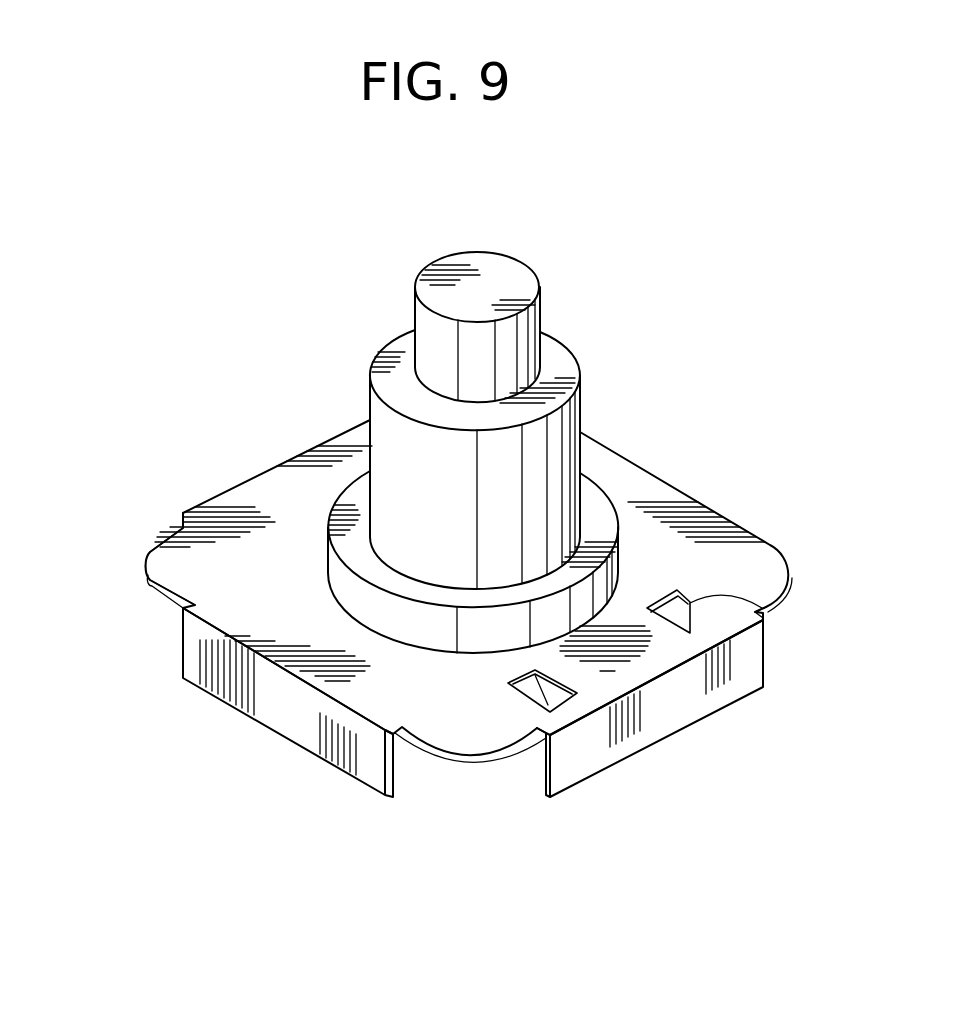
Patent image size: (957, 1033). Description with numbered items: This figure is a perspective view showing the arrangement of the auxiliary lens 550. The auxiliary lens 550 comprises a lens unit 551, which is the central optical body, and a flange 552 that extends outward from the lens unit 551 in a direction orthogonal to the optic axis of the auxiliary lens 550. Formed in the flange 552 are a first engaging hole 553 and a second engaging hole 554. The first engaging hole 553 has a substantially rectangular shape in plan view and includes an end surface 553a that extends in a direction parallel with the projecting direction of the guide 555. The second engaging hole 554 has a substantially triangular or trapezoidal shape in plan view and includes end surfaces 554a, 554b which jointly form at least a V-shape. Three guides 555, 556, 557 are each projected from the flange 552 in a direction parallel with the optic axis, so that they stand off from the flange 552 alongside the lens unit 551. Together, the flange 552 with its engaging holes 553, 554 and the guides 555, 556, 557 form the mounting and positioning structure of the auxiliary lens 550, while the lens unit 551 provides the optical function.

The auxiliary lens 550 is at (528, 641).
The lens unit 551 is at (563, 417).
The flange 552 is at (763, 558).
The first engaging hole 553 is at (538, 693).
The end surface 553a is at (562, 698).
The second engaging hole 554 is at (778, 612).
The end surface 554a is at (677, 617).
The end surface 554b is at (693, 612).
The guide 555 is at (653, 717).
The guide 556 is at (268, 698).
The guide 557 is at (247, 478).